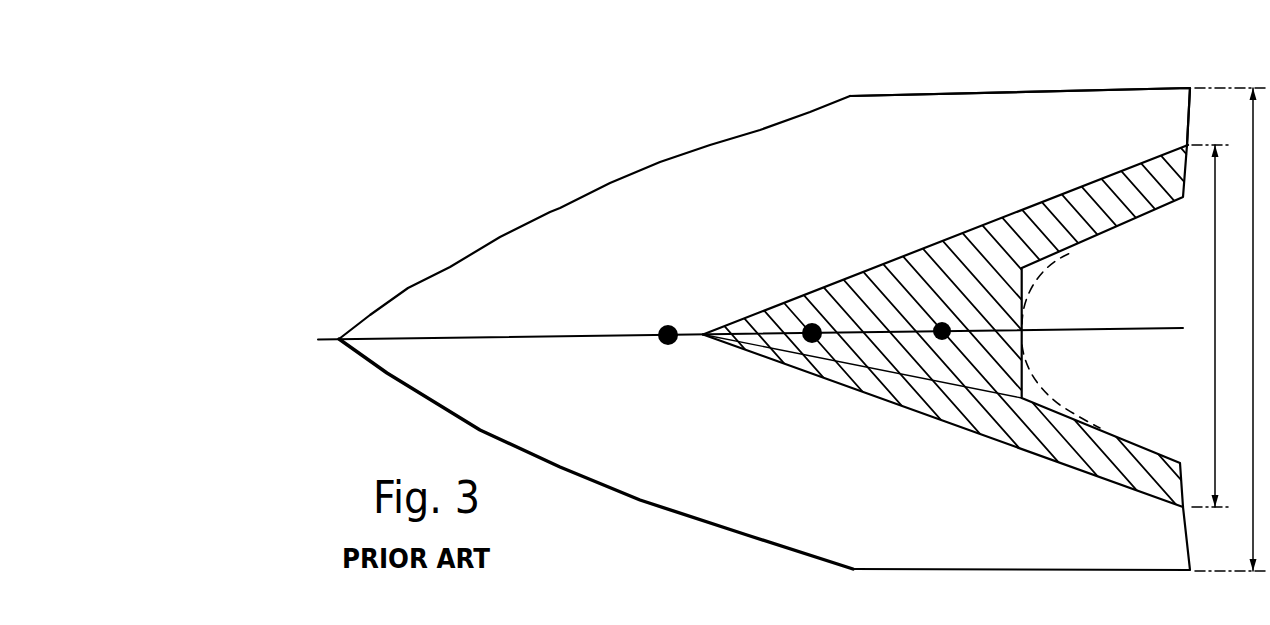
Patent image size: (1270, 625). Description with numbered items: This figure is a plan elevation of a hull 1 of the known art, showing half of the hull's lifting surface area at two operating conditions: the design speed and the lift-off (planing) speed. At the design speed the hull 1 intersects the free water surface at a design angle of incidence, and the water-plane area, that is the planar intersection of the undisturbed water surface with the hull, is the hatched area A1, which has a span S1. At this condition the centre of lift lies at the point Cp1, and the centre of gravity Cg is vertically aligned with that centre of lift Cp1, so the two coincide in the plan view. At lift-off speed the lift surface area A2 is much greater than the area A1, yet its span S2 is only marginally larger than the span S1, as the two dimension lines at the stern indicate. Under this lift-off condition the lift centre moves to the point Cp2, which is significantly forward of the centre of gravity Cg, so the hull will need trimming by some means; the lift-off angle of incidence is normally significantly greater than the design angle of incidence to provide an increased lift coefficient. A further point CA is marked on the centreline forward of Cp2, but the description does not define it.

The hull 1 is at (639, 222).
The water-plane area at design speed A1 is at (1108, 222).
The lift surface area at lift-off speed A2 is at (973, 133).
The aerodynamic center CA is at (668, 343).
The centre of lift at design speed Cp1 is at (950, 333).
The centre of gravity Cg is at (1070, 340).
The centre of lift at lift-off speed Cp2 is at (812, 343).
The span of water-plane area at design speed S1 is at (1212, 326).
The span of lift surface area at lift-off speed S2 is at (1232, 329).